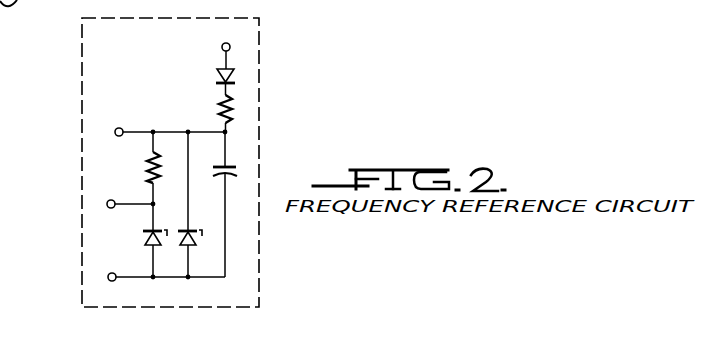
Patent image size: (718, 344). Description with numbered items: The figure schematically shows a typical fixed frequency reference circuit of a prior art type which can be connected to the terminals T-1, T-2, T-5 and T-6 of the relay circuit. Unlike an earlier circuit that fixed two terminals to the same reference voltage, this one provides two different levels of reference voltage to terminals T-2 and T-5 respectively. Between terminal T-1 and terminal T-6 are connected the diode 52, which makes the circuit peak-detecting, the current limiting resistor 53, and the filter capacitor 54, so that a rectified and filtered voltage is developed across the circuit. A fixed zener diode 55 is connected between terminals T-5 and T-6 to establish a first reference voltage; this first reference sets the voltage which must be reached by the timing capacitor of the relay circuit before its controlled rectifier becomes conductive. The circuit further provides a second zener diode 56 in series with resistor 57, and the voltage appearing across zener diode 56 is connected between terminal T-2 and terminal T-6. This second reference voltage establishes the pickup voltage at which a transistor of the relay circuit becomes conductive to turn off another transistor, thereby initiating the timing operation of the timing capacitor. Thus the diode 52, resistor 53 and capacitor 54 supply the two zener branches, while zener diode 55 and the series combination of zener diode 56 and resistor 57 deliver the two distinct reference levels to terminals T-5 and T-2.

The terminal T-1 is at (238, 27).
The terminal T-2 is at (136, 193).
The terminal T-5 is at (139, 114).
The terminal T-6 is at (131, 260).
The diode 52 is at (217, 77).
The current limiting resistor 53 is at (218, 104).
The filter capacitor 54 is at (212, 175).
The fixed zener diode 55 is at (190, 245).
The second zener diode 56 is at (145, 239).
The resistor 57 is at (148, 170).